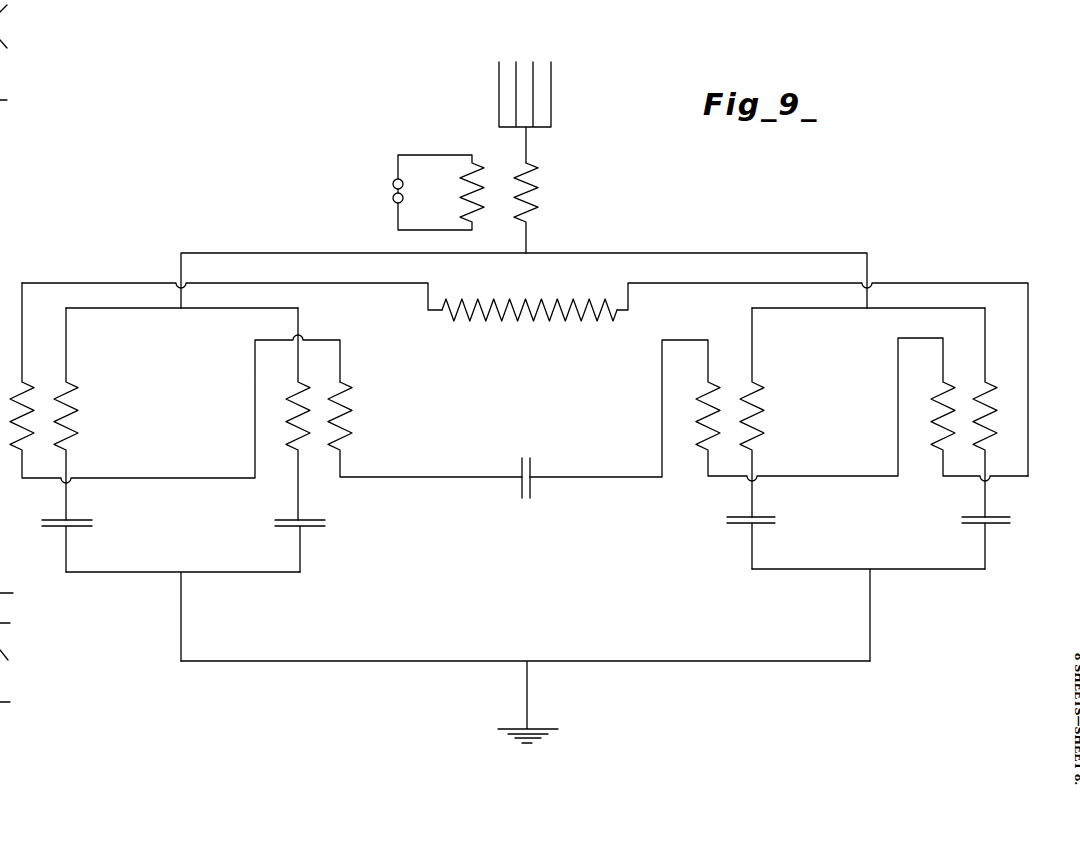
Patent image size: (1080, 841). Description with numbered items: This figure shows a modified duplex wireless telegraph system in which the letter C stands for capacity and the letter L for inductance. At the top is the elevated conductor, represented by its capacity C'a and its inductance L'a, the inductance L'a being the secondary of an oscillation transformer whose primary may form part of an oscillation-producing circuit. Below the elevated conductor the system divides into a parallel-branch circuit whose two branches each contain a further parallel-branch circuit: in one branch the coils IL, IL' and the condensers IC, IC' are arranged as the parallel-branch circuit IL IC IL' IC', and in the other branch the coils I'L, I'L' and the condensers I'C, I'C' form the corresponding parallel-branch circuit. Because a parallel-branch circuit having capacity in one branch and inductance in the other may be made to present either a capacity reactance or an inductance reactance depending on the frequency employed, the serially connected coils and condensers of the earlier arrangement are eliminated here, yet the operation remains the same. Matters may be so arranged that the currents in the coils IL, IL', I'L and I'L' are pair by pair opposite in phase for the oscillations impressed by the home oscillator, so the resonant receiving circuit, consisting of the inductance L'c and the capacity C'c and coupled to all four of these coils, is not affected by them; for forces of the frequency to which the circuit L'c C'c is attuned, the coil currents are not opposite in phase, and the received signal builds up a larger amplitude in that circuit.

The elevated conductor capacity C'a is at (552, 112).
The oscillation transformer secondary L'a is at (550, 208).
The resonant receiving circuit inductance L'c is at (529, 327).
The resonant receiving circuit capacity C'c is at (549, 485).
The coil of first parallel-branch circuit IL is at (79, 414).
The condenser of first parallel-branch circuit IC is at (80, 542).
The coil of first parallel-branch circuit IL' is at (331, 414).
The condenser of first parallel-branch circuit IC' is at (314, 546).
The coil of second parallel-branch circuit I'L is at (771, 412).
The condenser of second parallel-branch circuit I'C is at (771, 536).
The coil of second parallel-branch circuit I'L' is at (1026, 412).
The condenser of second parallel-branch circuit I'C' is at (1012, 535).